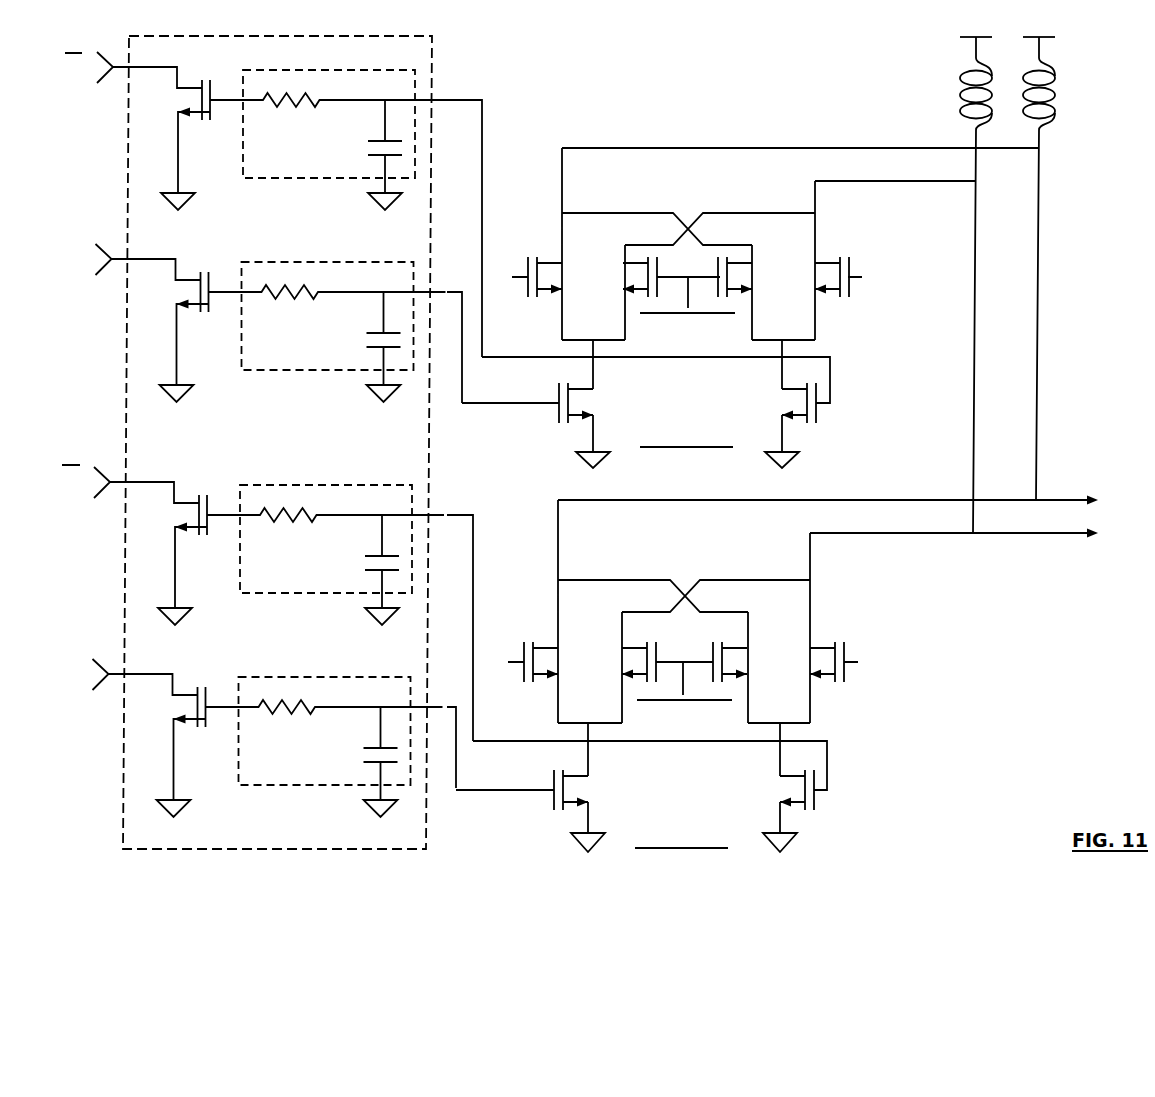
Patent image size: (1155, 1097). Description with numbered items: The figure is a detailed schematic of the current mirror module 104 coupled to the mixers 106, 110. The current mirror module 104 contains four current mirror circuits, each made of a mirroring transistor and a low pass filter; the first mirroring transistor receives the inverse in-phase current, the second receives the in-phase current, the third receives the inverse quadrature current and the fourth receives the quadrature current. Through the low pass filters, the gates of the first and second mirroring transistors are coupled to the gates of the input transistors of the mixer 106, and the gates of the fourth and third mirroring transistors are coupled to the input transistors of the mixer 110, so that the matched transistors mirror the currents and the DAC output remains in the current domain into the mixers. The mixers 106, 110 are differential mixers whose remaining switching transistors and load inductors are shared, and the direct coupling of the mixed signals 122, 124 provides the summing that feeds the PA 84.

The current mirror module 104 is at (271, 442).
The mixer 106 is at (750, 308).
The mixer 110 is at (674, 676).
The mixed signal 122 is at (815, 181).
The mixed signal 124 is at (810, 548).
The PA 84 is at (840, 518).